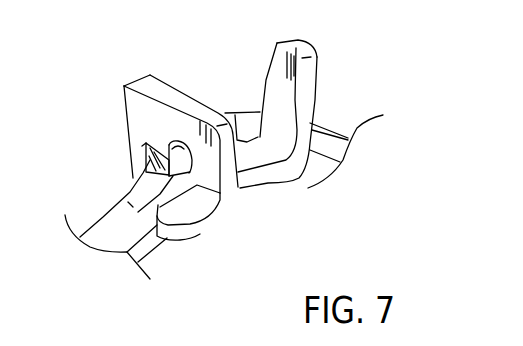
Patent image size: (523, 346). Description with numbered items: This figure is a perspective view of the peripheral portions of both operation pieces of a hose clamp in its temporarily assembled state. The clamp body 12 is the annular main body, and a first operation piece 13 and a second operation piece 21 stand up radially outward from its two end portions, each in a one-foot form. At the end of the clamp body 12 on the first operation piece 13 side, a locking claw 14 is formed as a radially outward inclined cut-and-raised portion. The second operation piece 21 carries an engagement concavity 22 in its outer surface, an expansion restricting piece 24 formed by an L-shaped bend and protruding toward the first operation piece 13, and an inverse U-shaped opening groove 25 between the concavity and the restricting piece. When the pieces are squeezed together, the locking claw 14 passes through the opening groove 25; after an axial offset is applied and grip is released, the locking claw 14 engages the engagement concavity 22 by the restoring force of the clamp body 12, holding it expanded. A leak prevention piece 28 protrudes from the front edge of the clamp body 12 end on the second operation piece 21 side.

The clamp body 12 is at (113, 222).
The first operation piece 13 is at (277, 57).
The locking claw 14 is at (147, 165).
The second operation piece 21 is at (137, 93).
The engagement concavity 22 is at (147, 150).
The expansion restricting piece 24 is at (198, 225).
The opening groove 25 is at (168, 147).
The leak prevention piece 28 is at (247, 135).